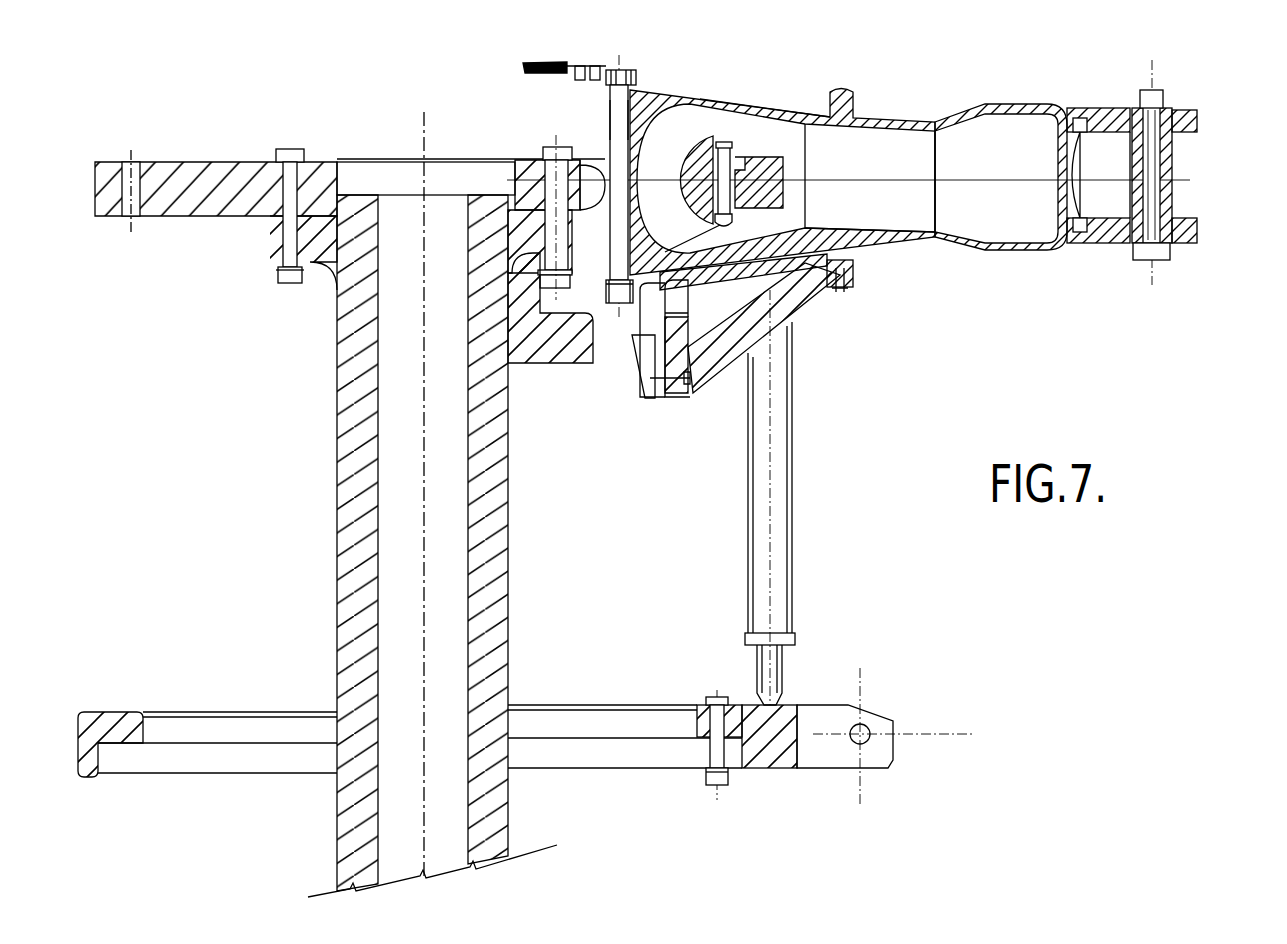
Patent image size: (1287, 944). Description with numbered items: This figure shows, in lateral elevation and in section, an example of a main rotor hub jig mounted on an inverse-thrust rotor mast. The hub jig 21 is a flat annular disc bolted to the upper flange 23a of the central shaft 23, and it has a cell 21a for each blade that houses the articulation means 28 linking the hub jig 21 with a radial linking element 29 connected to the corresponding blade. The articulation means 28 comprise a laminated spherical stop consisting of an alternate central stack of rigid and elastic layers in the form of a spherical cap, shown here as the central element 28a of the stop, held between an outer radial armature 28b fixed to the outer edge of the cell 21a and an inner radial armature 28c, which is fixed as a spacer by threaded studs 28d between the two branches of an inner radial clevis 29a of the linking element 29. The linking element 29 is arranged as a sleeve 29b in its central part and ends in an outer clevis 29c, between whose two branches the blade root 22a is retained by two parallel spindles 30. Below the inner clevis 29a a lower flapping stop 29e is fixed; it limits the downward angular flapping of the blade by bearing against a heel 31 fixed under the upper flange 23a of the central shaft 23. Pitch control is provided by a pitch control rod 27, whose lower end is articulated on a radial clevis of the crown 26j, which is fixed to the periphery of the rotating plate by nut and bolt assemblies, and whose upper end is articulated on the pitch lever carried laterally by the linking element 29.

The hub jig 21 is at (163, 172).
The cell 21a is at (598, 168).
The blade root 22a is at (1103, 200).
The central shaft 23 is at (350, 495).
The upper flange 23a is at (328, 245).
The crown 26j is at (109, 730).
The pitch control rod 27 is at (783, 545).
The articulation means 28 is at (679, 102).
The pivot pin 28a is at (684, 138).
The outer radial armature 28b is at (713, 224).
The inner radial armature 28c is at (620, 70).
The threaded studs 28d is at (620, 118).
The radial linking element 29 is at (948, 98).
The inner radial clevis 29a is at (766, 106).
The sleeve 29b is at (905, 244).
The outer clevis 29c is at (1106, 122).
The lower flapping stop 29e is at (658, 356).
The spindles 30 is at (1155, 203).
The heel 31 is at (549, 338).